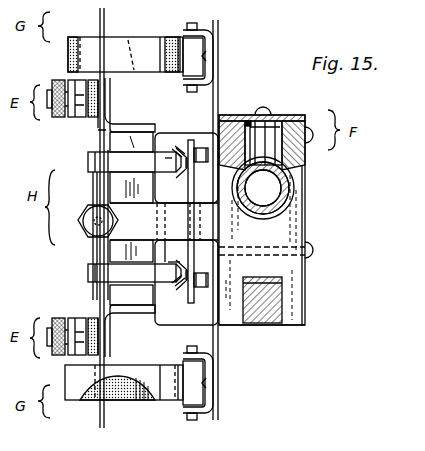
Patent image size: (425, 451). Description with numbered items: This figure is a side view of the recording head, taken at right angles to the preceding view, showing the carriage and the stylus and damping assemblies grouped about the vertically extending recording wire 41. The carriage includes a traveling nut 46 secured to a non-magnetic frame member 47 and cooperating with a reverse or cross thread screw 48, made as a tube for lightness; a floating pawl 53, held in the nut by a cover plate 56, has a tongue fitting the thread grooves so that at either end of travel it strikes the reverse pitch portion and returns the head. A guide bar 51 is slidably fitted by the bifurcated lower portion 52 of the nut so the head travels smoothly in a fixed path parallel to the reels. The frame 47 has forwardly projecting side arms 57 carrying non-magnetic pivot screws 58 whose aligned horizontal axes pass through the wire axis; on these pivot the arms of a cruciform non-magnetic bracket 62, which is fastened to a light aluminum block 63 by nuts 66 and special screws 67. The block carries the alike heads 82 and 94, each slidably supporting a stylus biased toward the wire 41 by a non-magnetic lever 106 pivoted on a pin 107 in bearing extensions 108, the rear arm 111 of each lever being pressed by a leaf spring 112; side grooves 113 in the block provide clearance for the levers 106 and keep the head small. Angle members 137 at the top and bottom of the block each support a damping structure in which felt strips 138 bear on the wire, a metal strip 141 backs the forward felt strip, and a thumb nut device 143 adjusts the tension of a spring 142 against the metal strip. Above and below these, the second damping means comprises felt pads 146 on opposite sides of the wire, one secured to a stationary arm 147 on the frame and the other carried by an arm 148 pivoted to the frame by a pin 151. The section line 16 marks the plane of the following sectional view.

The section line 16 is at (226, 19).
The wire 41 is at (98, 14).
The traveling nut 46 is at (306, 232).
The frame member 47 is at (219, 82).
The cross thread screw 48 is at (293, 188).
The guide bar 51 is at (264, 326).
The bifurcated lower portion 52 is at (299, 307).
The floating pawl 53 is at (250, 118).
The cover plate 56 is at (297, 116).
The side arms 57 is at (163, 208).
The pivot screws 58 is at (80, 224).
The cruciform bracket 62 is at (196, 290).
The block 63 is at (100, 140).
The nuts 66 is at (201, 163).
The special screws 67 is at (192, 141).
The head 82 is at (106, 180).
The head 94 is at (92, 284).
The lever 106 is at (90, 157).
The pin 107 is at (171, 150).
The bearing extensions 108 is at (168, 262).
The rear arm 111 is at (166, 160).
The leaf spring 112 is at (181, 146).
The side grooves 113 is at (134, 146).
The angle members 137 is at (112, 116).
The felt strips 138 is at (106, 78).
The metal strip 141 is at (92, 80).
The spring 142 is at (76, 80).
The thumb nut device 143 is at (52, 88).
The felt pads 146 is at (136, 50).
The stationary arm 147 is at (140, 72).
The pivoted arm 148 is at (174, 72).
The pin 151 is at (192, 23).